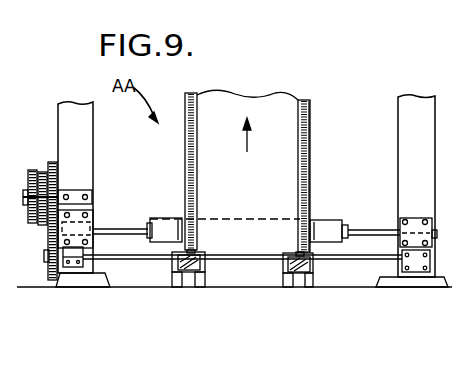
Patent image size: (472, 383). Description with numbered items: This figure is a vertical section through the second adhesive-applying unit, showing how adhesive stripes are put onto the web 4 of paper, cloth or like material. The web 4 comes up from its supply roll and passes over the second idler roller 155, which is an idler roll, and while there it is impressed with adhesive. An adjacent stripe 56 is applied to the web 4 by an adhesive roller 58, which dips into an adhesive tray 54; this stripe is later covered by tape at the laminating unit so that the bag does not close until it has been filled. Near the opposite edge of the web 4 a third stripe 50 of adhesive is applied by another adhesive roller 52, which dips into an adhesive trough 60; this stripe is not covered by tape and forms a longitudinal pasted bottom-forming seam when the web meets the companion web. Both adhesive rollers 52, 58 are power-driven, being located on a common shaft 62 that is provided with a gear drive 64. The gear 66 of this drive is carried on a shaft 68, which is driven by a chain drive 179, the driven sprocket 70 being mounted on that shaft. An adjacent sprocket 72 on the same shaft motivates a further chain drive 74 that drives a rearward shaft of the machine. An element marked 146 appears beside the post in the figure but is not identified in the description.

The web 4 is at (233, 108).
The third stripe of adhesive 50 is at (196, 146).
The adhesive roller 52 is at (181, 245).
The adhesive tray 54 is at (313, 267).
The adjacent stripe 56 is at (308, 150).
The adhesive roller 58 is at (297, 252).
The adhesive trough 60 is at (203, 268).
The shaft 62 is at (139, 257).
The gear drive 64 is at (48, 272).
The gear 66 is at (55, 166).
The shaft 68 is at (59, 192).
The driven sprocket 70 is at (41, 224).
The adjacent sprocket 72 is at (32, 170).
The chain drive 74 is at (27, 222).
The post edge 146 is at (312, 124).
The second idler roller 155 is at (314, 224).
The chain drive 179 is at (42, 172).